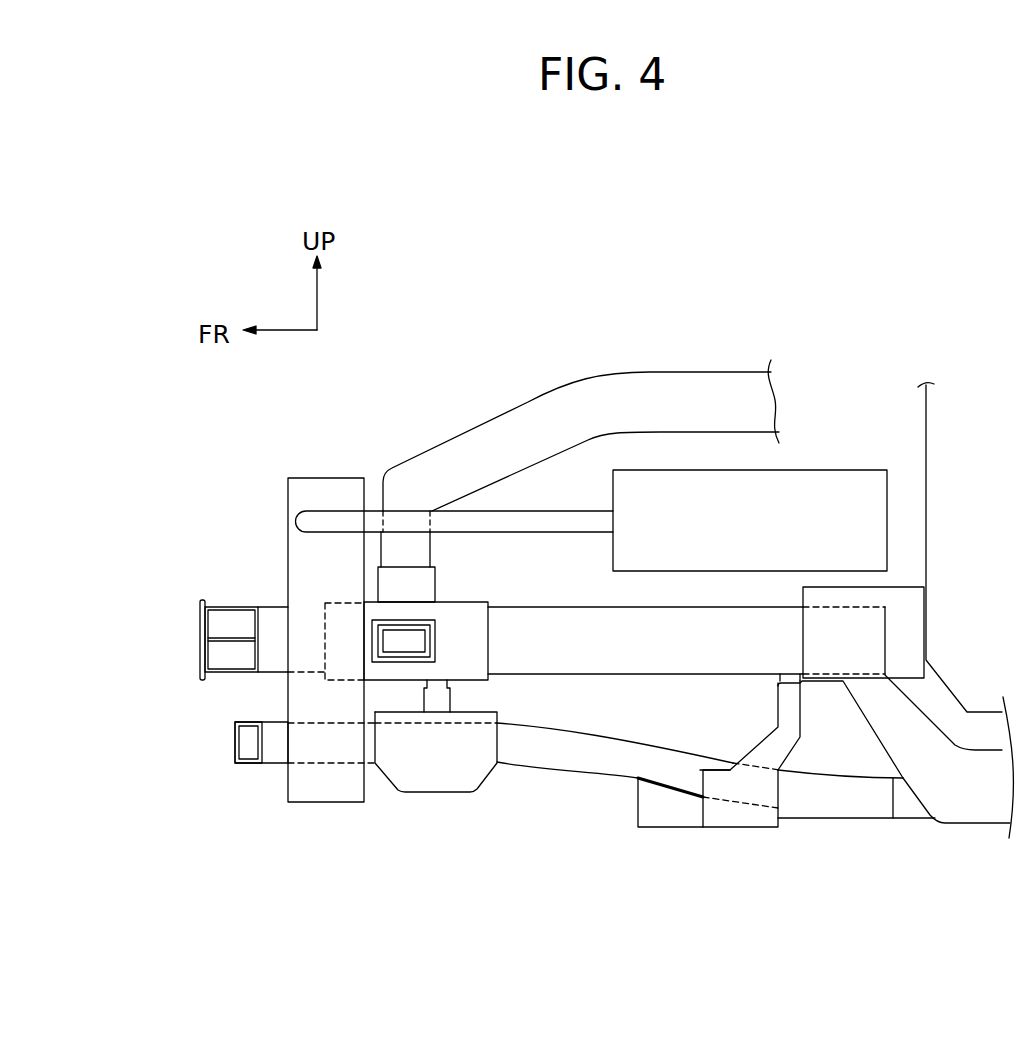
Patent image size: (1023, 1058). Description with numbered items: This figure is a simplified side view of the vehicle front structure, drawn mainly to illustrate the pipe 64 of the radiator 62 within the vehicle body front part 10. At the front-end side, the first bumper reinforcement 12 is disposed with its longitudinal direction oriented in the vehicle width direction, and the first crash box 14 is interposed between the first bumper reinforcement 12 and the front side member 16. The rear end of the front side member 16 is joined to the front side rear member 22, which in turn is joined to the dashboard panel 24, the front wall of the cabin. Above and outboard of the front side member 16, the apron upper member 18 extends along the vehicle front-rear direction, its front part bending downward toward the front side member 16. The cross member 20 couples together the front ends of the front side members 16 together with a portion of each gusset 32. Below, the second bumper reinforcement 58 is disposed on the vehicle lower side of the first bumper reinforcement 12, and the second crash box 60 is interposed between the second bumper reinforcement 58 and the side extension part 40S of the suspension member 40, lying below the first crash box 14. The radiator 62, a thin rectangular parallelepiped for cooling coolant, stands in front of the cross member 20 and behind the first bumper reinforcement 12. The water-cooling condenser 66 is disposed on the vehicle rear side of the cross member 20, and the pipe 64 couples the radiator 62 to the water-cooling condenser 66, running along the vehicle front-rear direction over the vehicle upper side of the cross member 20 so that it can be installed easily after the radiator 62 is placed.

The vehicle body front part 10 is at (843, 341).
The first bumper reinforcement 12 is at (225, 606).
The first crash box 14 is at (268, 606).
The front side member 16 is at (562, 607).
The apron upper member 18 is at (545, 396).
The cross member 20 is at (438, 640).
The front side rear member 22 is at (874, 733).
The dashboard panel 24 is at (930, 471).
The gusset 32 is at (463, 682).
The suspension member 40 is at (558, 774).
The side extension part 40S is at (578, 730).
The second bumper reinforcement 58 is at (247, 766).
The second crash box 60 is at (272, 766).
The radiator 62 is at (298, 556).
The pipe 64 is at (514, 511).
The water-cooling condenser 66 is at (787, 484).